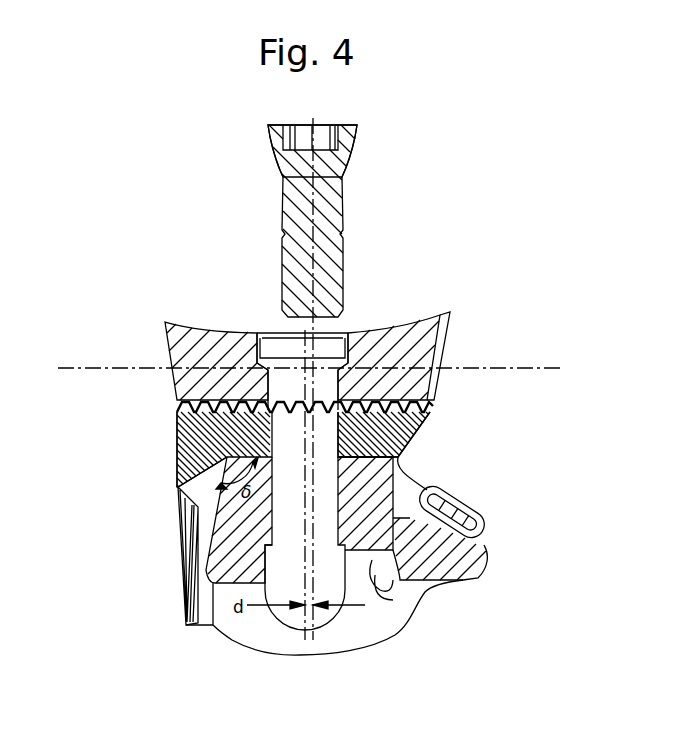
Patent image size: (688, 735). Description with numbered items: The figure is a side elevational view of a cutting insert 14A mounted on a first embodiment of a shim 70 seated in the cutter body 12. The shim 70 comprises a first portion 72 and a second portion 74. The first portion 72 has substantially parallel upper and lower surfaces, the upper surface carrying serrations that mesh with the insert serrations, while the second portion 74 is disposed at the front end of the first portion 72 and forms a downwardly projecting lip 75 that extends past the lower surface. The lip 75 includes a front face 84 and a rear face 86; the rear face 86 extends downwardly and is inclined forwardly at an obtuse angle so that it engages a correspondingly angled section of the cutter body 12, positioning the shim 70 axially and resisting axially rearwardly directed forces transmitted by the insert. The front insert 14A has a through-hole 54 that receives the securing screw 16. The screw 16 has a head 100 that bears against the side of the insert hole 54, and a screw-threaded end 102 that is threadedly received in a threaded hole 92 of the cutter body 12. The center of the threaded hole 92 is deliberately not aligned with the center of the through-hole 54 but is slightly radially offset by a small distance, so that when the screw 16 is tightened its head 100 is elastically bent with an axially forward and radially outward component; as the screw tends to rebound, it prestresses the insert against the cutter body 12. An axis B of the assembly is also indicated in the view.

The head 100 is at (357, 131).
The securing screw 16 is at (347, 157).
The screw-threaded end 102 is at (345, 281).
The front insert 14A is at (449, 333).
The through-hole 54 is at (258, 346).
The second portion 74 is at (190, 430).
The shim 70 is at (163, 455).
The first portion 72 is at (403, 428).
The front face 84 is at (177, 486).
The lip 75 is at (195, 490).
The rear face 86 is at (200, 510).
The cutter body 12 is at (222, 557).
The threaded hole 92 is at (382, 496).
The axis B is at (68, 367).